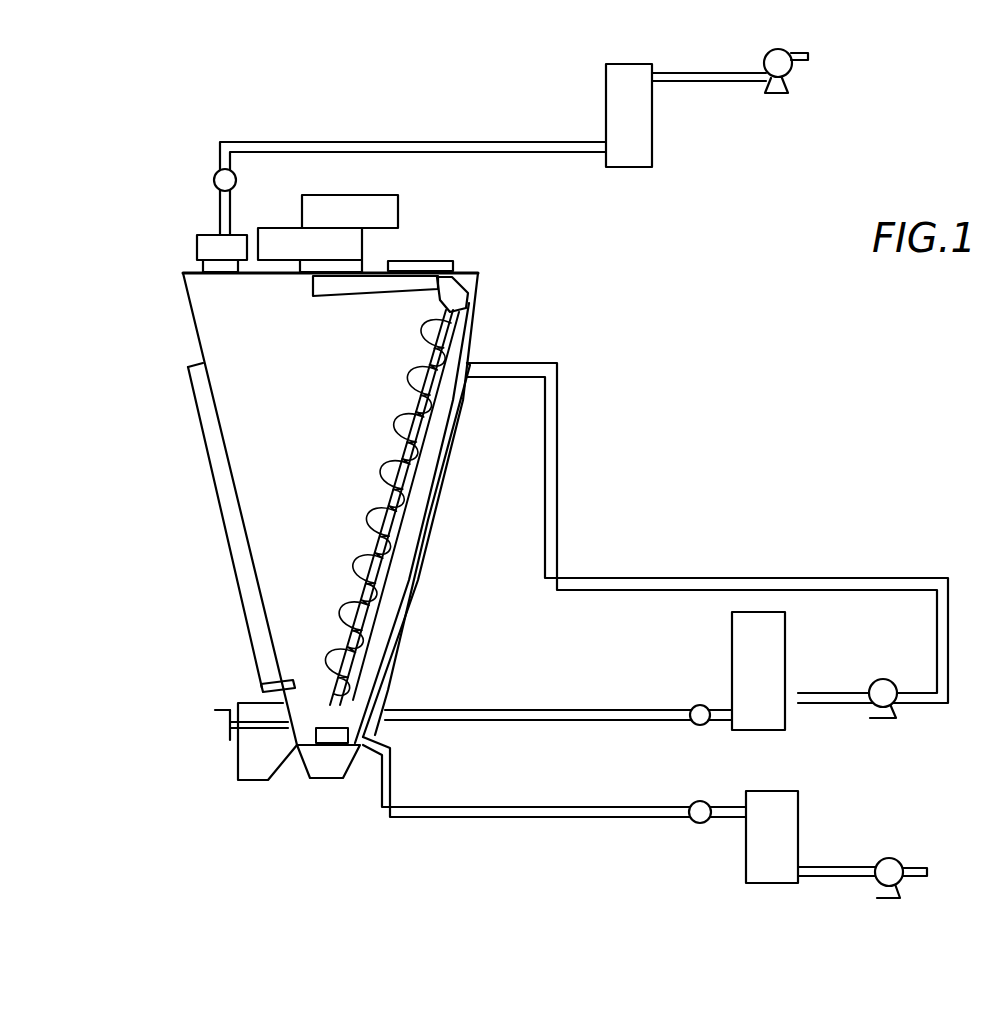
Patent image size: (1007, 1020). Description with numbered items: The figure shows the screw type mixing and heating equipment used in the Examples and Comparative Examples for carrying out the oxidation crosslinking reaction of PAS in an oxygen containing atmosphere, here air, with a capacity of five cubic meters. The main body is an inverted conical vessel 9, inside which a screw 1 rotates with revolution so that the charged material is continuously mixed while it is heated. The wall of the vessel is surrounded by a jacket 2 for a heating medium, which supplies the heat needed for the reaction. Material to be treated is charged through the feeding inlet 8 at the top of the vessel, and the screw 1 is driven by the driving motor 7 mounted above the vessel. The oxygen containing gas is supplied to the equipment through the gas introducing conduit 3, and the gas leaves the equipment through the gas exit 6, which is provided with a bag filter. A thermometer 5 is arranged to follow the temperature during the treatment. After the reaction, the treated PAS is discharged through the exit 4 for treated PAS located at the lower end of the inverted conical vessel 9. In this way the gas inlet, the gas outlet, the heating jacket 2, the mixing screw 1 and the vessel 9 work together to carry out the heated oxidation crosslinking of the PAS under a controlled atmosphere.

The screw 1 is at (462, 318).
The jacket for a heating medium 2 is at (192, 405).
The gas introducing conduit 3 is at (392, 763).
The exit for treated PAS 4 is at (236, 762).
The thermometer 5 is at (264, 685).
The gas exit (bag filter) 6 is at (195, 244).
The driving motor 7 is at (362, 242).
The feeding inlet 8 is at (453, 262).
The inverted conical vessel 9 is at (480, 285).